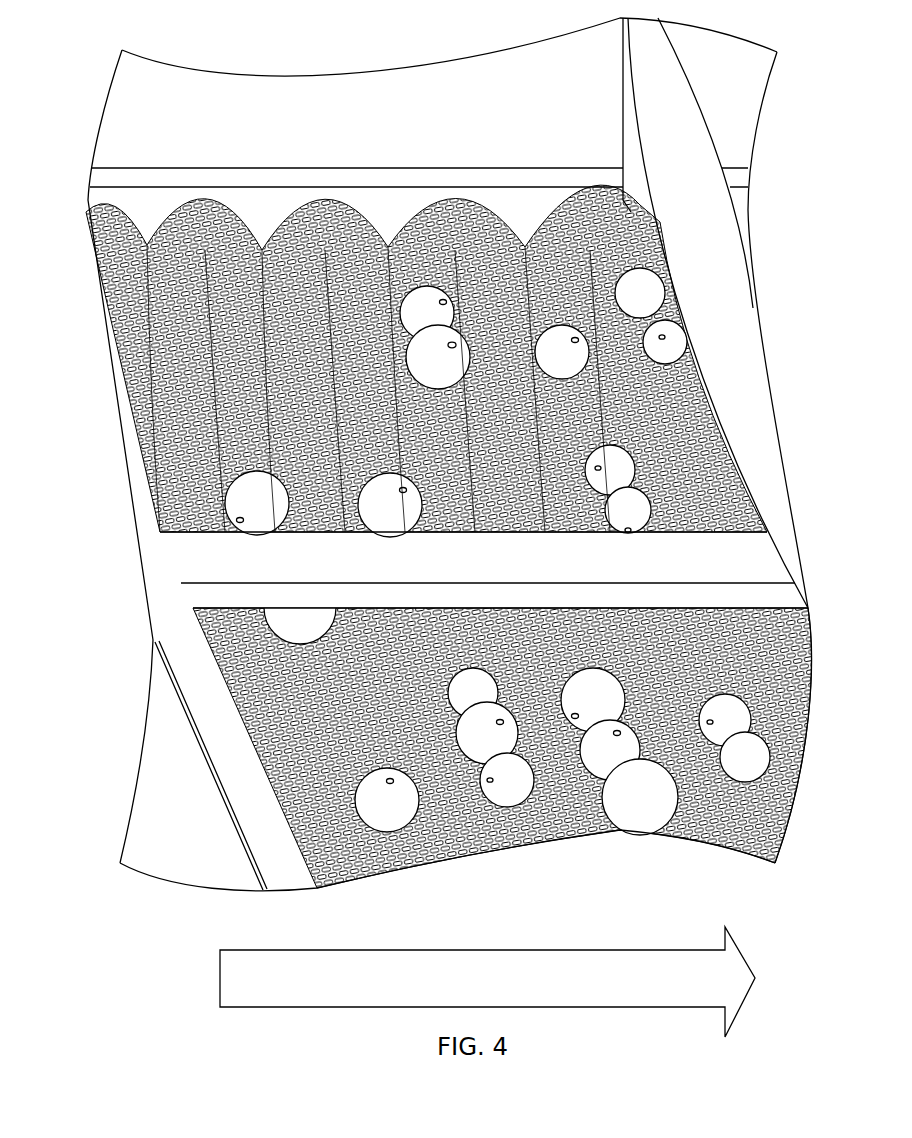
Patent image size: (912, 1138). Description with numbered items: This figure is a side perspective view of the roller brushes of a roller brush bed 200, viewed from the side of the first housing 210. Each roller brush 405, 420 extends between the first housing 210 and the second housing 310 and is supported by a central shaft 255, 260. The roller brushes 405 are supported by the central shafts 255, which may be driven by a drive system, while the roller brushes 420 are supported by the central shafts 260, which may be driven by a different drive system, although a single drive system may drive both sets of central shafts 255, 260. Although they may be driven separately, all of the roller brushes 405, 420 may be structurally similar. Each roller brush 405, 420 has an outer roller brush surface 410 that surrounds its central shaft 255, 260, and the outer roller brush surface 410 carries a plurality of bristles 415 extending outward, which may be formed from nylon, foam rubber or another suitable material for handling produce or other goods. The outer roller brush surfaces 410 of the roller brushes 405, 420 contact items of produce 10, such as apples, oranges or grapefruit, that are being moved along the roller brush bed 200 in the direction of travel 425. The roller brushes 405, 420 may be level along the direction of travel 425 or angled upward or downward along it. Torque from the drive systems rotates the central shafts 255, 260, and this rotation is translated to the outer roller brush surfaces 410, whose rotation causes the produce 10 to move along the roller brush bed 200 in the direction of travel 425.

The produce 10 is at (377, 815).
The roller brush bed 200 is at (133, 36).
The first housing 210 is at (281, 884).
The central shaft 255 is at (115, 243).
The central shaft 260 is at (321, 226).
The second housing 310 is at (488, 168).
The roller brush 405 is at (207, 226).
The outer roller brush surface 410 is at (130, 368).
The bristles 415 is at (127, 436).
The roller brush 420 is at (89, 197).
The direction of travel 425 is at (220, 977).